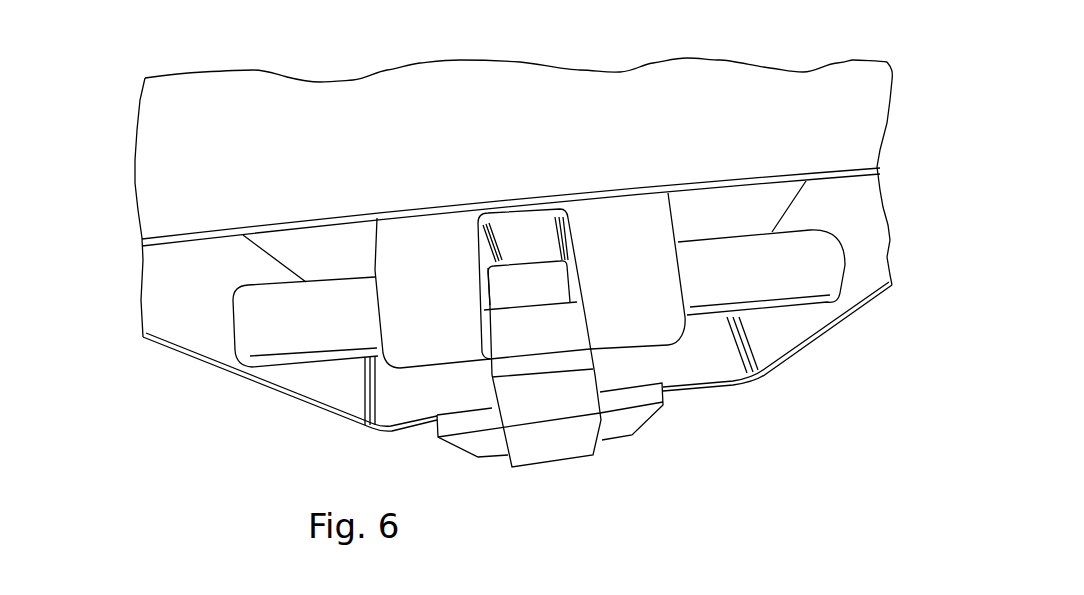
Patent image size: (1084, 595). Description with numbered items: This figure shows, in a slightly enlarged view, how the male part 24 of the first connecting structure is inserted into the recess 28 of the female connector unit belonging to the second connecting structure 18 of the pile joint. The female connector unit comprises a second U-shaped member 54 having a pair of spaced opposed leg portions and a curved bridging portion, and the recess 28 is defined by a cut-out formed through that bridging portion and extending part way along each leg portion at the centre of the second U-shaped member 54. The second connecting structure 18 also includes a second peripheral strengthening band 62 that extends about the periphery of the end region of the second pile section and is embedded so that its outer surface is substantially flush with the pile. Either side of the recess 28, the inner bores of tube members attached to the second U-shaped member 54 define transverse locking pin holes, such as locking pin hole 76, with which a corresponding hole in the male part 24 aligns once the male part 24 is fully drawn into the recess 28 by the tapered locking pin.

The second connecting structure 18 is at (860, 127).
The second peripheral strengthening band 62 is at (163, 204).
The recess 28 is at (578, 278).
The transverse locking pin hole 76 is at (484, 303).
The male part 24 is at (553, 335).
The second U-shaped member 54 is at (652, 318).